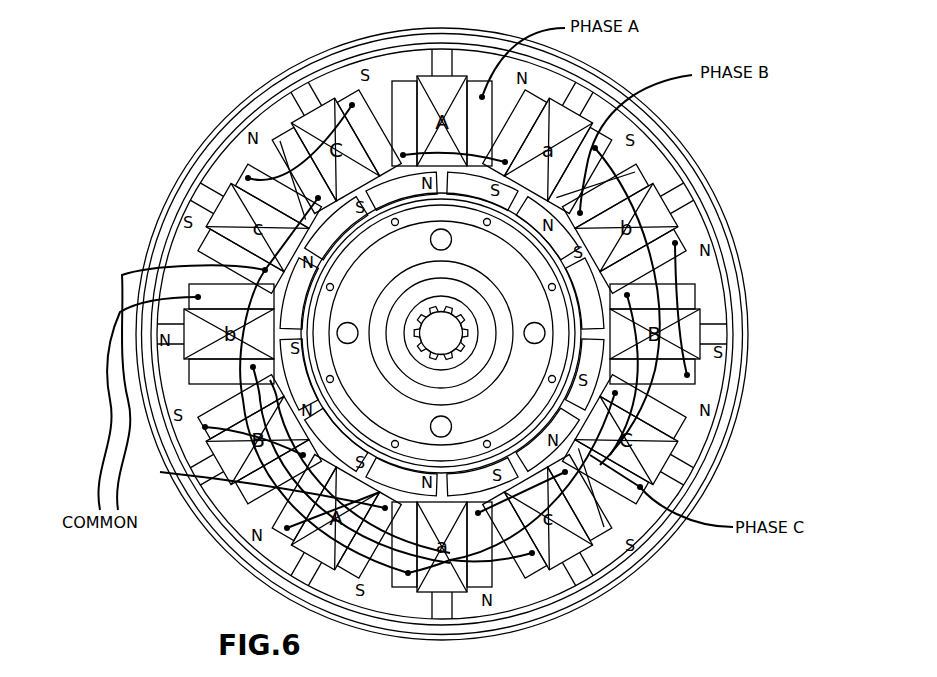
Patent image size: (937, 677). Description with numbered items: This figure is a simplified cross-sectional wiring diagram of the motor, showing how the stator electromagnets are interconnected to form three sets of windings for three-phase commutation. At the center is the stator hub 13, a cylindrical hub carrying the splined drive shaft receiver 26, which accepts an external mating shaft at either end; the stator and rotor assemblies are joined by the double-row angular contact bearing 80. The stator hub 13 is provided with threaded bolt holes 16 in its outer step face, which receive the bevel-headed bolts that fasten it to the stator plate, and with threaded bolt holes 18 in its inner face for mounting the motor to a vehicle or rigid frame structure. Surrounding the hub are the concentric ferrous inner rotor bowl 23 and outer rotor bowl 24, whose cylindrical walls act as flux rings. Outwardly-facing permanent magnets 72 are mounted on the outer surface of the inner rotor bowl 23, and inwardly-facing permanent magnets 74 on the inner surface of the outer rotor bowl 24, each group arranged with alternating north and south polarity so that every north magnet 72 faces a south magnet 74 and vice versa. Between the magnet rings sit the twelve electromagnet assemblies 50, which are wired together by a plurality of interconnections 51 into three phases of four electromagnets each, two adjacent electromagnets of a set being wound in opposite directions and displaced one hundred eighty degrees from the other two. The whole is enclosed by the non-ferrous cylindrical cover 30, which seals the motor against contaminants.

The stator hub 13 is at (403, 423).
The threaded bolt holes 16 is at (335, 287).
The threaded bolt holes 18 is at (452, 240).
The inner cylindrical rotor bowl 23 is at (333, 314).
The outer cylindrical rotor bowl 24 is at (193, 180).
The splined drive shaft receiver 26 is at (462, 308).
The cover 30 is at (178, 228).
The electromagnet assemblies 50 is at (310, 122).
The interconnections 51 is at (243, 167).
The outwardly-facing permanent magnets 72 is at (600, 296).
The inwardly-facing permanent magnets 74 is at (342, 77).
The bearing 80 is at (458, 396).